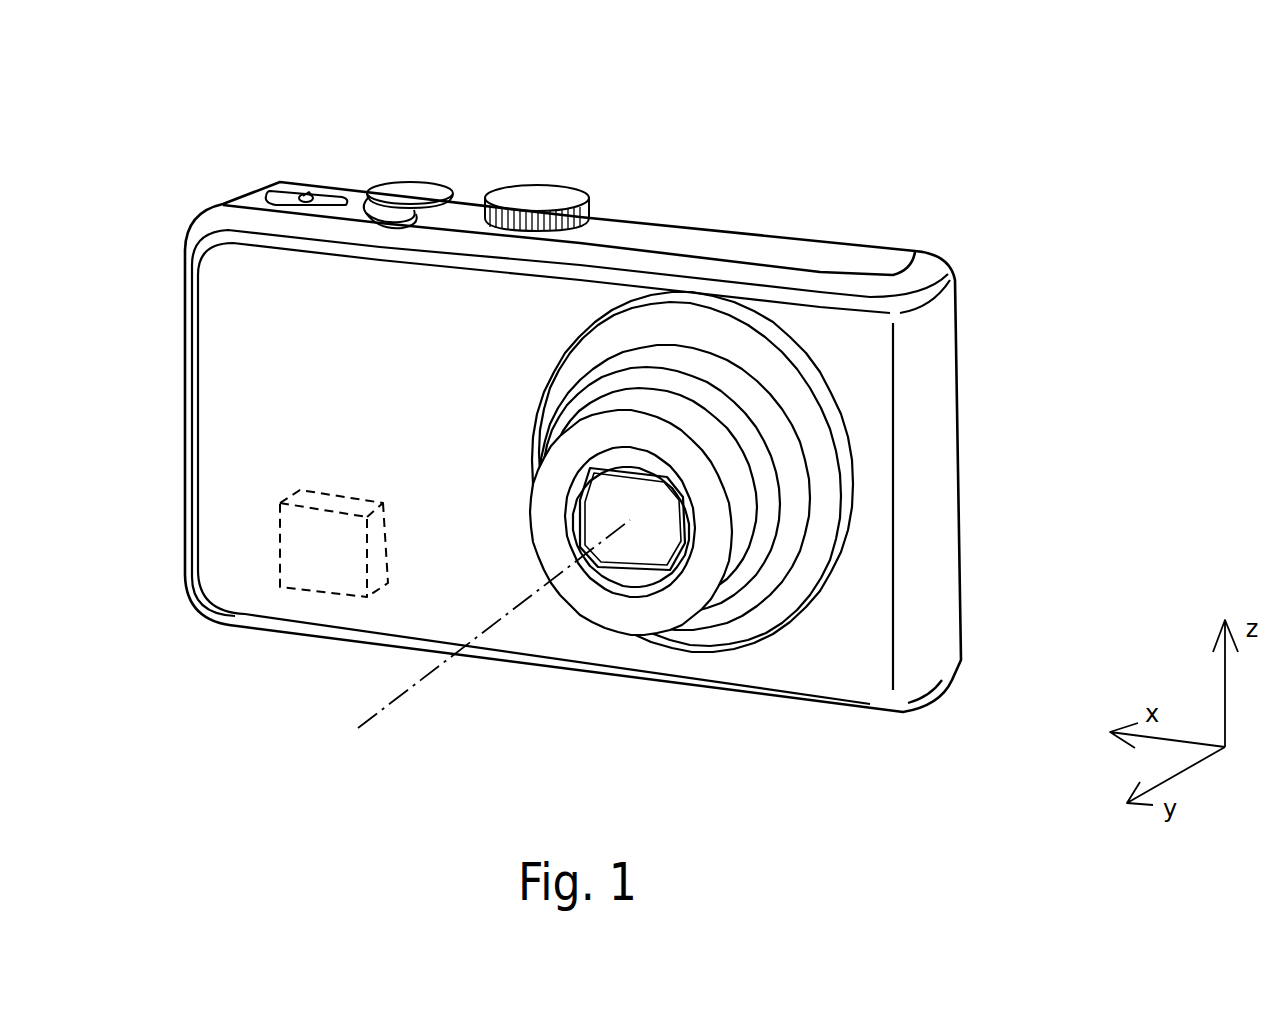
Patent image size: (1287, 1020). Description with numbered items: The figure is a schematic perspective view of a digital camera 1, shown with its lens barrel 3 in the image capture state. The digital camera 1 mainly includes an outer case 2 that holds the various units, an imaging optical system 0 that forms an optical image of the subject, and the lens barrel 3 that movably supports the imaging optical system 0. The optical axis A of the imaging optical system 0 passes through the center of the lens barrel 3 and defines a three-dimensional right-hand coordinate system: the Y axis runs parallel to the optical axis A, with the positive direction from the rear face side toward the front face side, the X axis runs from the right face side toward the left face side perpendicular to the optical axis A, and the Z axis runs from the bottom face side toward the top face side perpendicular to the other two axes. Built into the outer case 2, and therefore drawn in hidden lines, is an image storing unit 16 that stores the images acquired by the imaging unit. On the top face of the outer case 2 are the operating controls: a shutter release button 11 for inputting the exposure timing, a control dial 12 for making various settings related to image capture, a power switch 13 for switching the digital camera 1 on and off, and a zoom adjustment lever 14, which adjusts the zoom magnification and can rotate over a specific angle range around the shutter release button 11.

The digital camera 1 is at (584, 405).
The outer case 2 is at (832, 236).
The lens barrel 3 is at (690, 532).
The imaging optical system 0 is at (609, 577).
The shutter release button 11 is at (420, 193).
The control dial 12 is at (550, 196).
The power switch 13 is at (308, 194).
The zoom adjustment lever 14 is at (383, 208).
The image storing unit 16 is at (290, 547).
The optical axis A is at (481, 637).